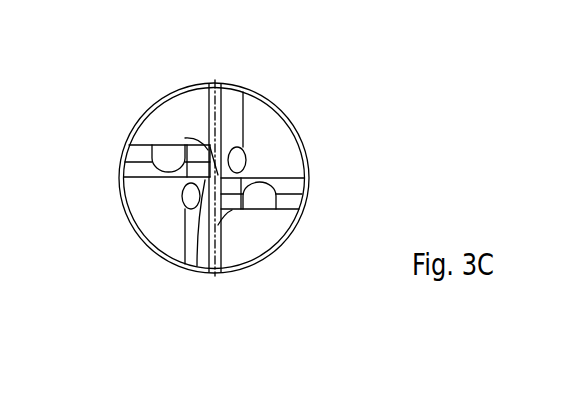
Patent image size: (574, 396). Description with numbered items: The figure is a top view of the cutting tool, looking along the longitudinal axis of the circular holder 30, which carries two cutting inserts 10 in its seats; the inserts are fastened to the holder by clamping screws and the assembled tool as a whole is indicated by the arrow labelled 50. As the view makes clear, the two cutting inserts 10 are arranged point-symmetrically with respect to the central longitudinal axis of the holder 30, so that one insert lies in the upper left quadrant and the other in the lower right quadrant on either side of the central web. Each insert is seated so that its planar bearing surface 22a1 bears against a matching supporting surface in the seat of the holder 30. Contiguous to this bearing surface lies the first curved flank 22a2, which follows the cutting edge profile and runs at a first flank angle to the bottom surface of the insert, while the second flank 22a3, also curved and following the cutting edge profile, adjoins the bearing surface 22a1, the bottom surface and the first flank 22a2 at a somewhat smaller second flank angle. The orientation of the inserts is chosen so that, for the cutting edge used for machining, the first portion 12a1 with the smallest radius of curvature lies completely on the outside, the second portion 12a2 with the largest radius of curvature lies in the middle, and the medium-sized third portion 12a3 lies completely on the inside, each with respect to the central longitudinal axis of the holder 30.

The cutting insert 10 is at (294, 170).
The holder 30 is at (237, 83).
The cutting insert assembly 50 is at (337, 105).
The planar bearing surface 22a1 is at (160, 153).
The first curved flank 22a2 is at (130, 168).
The second flank 22a3 is at (133, 152).
The first portion of the cutting edge 12a1 is at (138, 183).
The second portion of the cutting edge 12a2 is at (165, 178).
The third portion of the cutting edge 12a3 is at (207, 205).